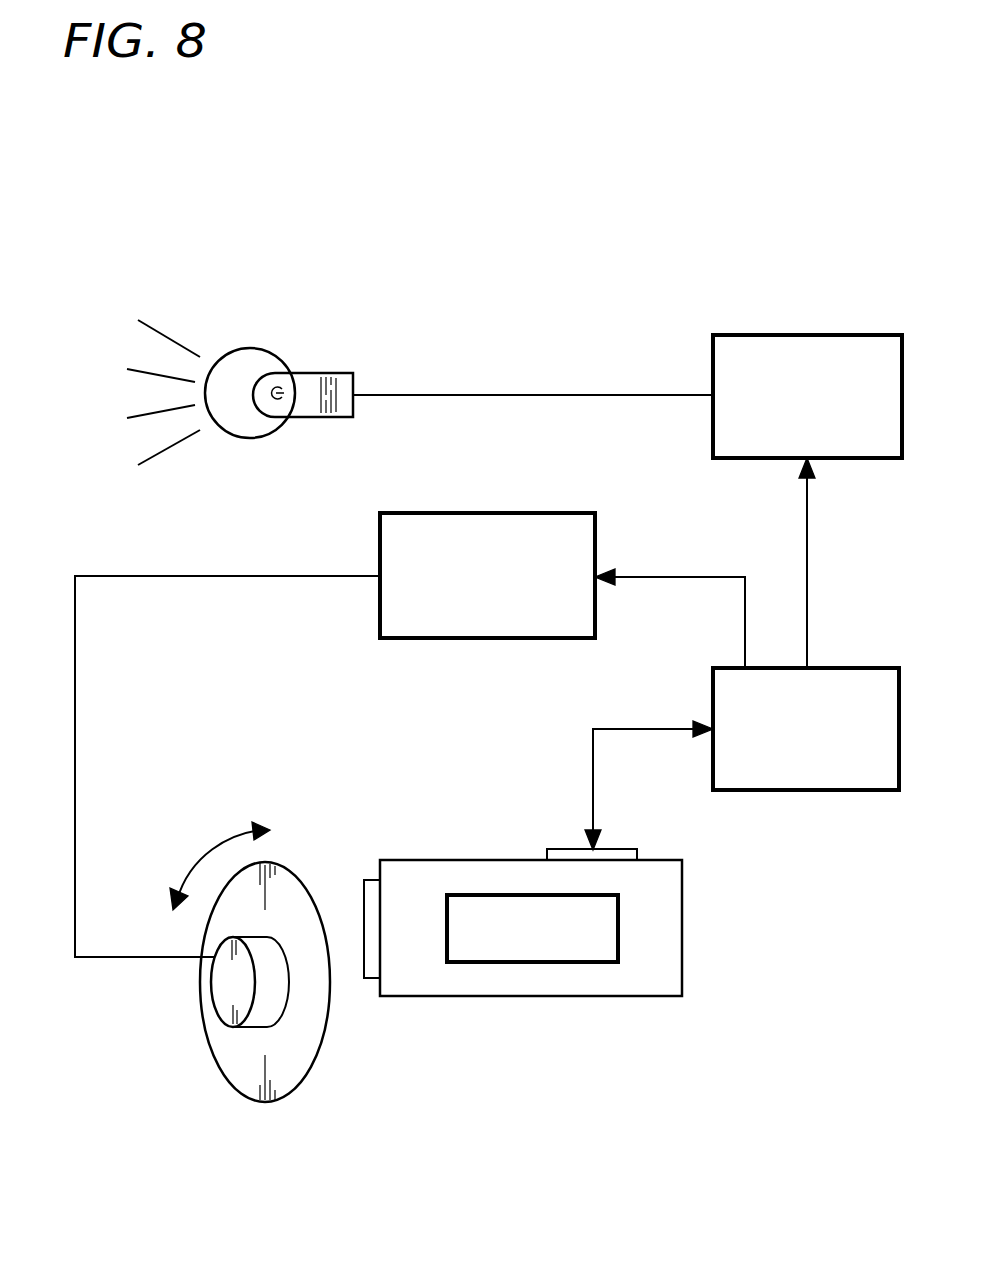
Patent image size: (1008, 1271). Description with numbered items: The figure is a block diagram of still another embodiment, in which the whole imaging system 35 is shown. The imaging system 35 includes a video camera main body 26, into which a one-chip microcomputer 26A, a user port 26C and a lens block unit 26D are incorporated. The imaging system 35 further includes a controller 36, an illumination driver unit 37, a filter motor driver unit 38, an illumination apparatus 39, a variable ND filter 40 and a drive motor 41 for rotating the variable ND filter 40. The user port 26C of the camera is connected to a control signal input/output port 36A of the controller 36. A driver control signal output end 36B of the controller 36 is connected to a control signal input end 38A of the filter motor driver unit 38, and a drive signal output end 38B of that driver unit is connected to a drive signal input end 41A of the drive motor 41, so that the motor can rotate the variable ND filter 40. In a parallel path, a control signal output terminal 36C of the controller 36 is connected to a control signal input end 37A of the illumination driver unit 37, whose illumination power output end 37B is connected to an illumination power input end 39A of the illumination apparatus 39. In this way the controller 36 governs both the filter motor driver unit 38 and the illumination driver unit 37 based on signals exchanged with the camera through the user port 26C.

The imaging system 35 is at (509, 207).
The illumination apparatus 39 is at (253, 348).
The illumination power input end 39A is at (357, 385).
The illumination driver unit 37 is at (806, 335).
The control signal input end 37A is at (812, 462).
The illumination power output end 37B is at (713, 390).
The filter motor driver unit 38 is at (492, 513).
The control signal input end 38A is at (598, 572).
The drive signal output end 38B is at (380, 570).
The controller 36 is at (850, 792).
The control signal input/output port 36A is at (712, 725).
The driver control signal output end 36B is at (742, 665).
The control signal output terminal 36C is at (810, 665).
The video camera main body 26 is at (650, 996).
The one-chip microcomputer 26A is at (562, 962).
The user port 26C is at (640, 855).
The lens block unit 26D is at (370, 895).
The variable ND filter 40 is at (262, 1102).
The drive motor 41 is at (272, 1005).
The drive signal input end 41A is at (215, 963).